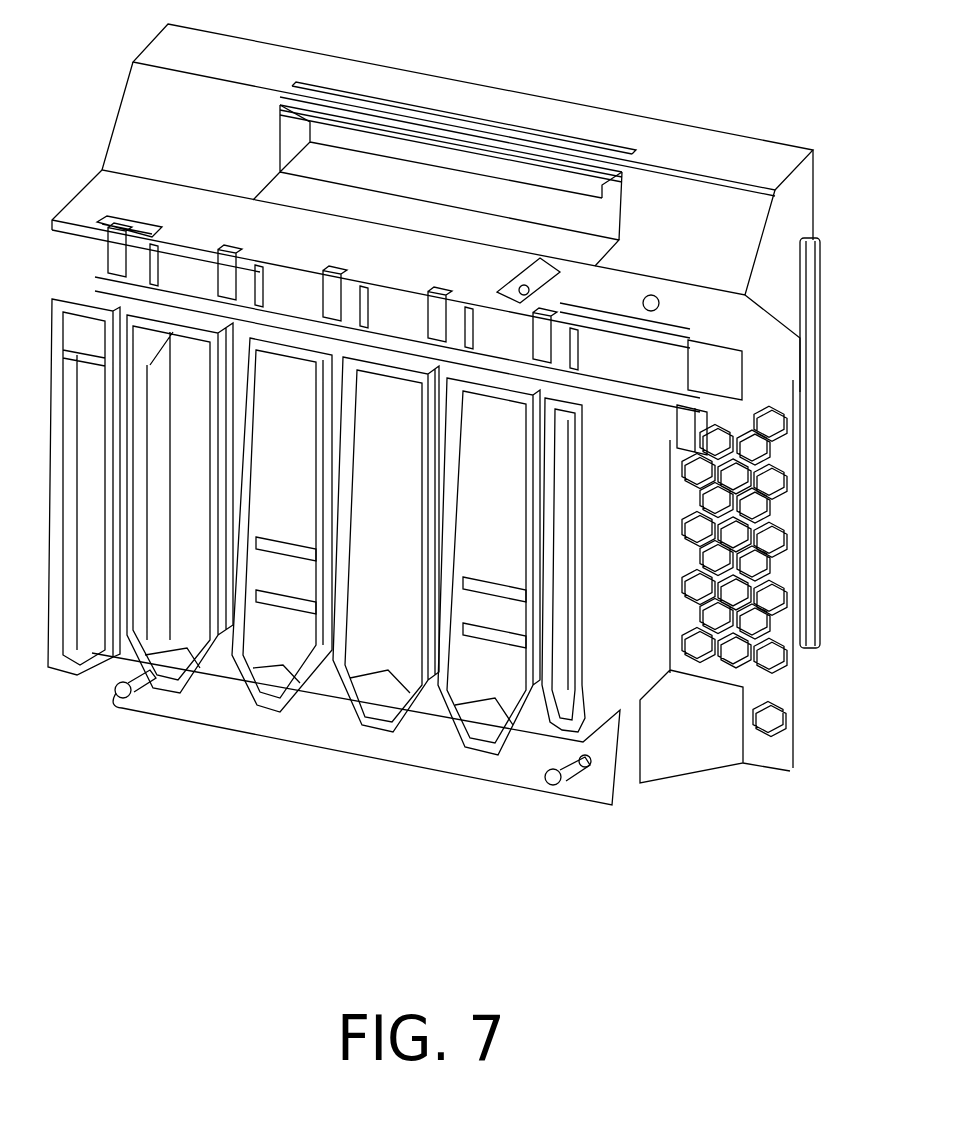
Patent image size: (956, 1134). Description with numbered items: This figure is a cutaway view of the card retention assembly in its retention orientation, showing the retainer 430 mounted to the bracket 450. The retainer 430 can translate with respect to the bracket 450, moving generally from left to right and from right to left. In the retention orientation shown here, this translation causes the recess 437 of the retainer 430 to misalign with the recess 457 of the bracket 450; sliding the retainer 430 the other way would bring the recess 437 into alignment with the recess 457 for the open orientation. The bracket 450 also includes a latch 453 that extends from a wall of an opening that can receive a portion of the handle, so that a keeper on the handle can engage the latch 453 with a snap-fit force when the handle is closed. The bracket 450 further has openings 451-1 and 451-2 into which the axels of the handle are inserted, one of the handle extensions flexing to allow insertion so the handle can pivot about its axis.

The bracket 450 is at (430, 87).
The retainer 430 is at (193, 303).
The recess 457 is at (323, 277).
The recess 437 is at (368, 332).
The latch 453 is at (523, 287).
The opening 451-2 is at (648, 296).
The opening 451-1 is at (612, 357).